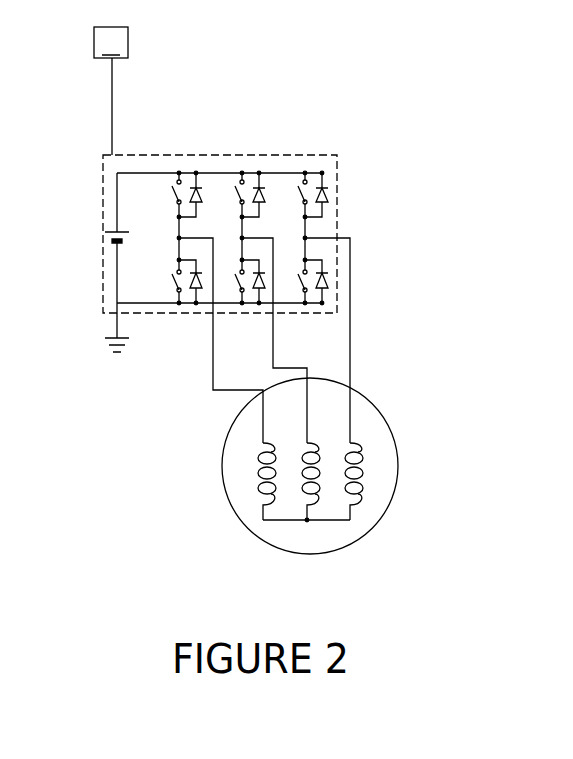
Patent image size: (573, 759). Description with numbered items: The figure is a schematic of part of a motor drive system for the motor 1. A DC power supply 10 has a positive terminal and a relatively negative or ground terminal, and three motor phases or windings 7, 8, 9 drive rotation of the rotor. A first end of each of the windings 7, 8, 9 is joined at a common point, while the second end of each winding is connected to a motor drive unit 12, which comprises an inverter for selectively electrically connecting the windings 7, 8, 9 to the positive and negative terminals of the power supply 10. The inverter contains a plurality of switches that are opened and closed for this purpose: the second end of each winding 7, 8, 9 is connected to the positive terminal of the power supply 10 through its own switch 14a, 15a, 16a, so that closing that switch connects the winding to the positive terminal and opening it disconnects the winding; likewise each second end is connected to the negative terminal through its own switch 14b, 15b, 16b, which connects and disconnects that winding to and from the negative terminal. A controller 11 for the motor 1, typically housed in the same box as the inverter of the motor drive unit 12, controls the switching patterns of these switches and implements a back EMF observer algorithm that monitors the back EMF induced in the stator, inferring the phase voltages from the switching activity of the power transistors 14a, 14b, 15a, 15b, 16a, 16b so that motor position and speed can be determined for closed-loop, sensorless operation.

The motor 1 is at (221, 458).
The motor phase or winding 7 is at (263, 498).
The motor phase or winding 8 is at (307, 495).
The motor phase or winding 9 is at (353, 505).
The DC power supply 10 is at (112, 247).
The controller 11 is at (111, 91).
The motor drive unit 12 is at (333, 105).
The switch 14a is at (165, 192).
The switch 14b is at (166, 289).
The switch 15a is at (229, 192).
The switch 15b is at (229, 290).
The switch 16a is at (292, 192).
The switch 16b is at (290, 291).